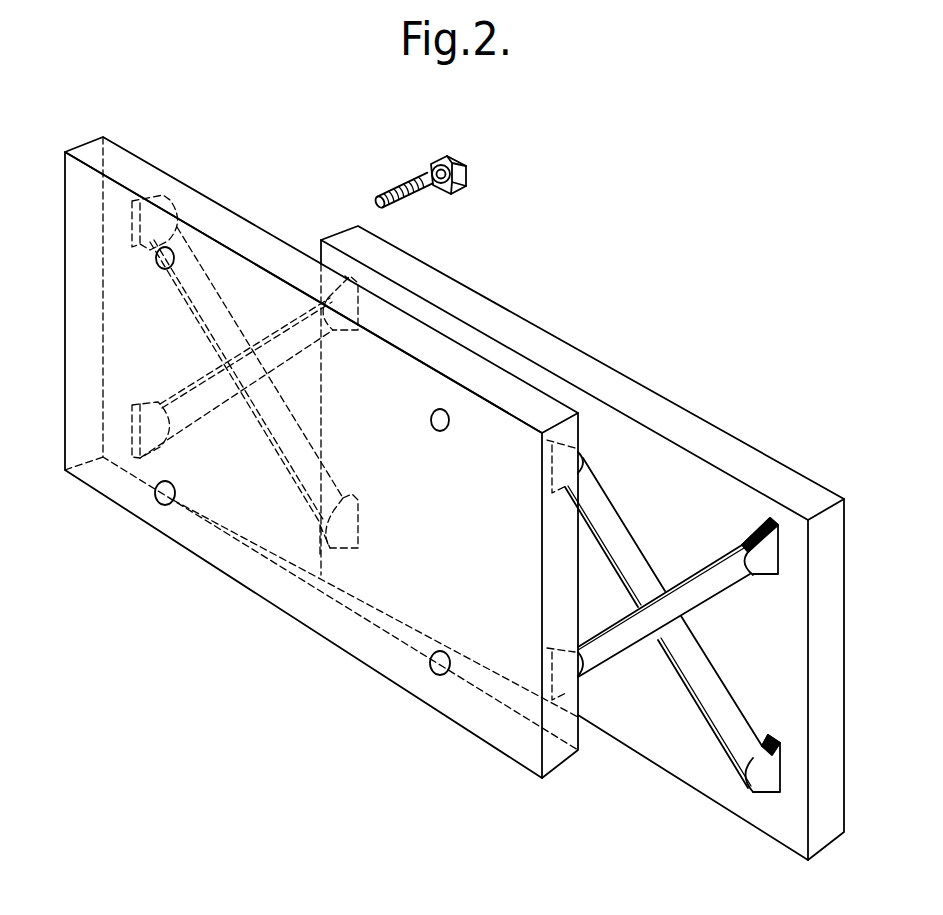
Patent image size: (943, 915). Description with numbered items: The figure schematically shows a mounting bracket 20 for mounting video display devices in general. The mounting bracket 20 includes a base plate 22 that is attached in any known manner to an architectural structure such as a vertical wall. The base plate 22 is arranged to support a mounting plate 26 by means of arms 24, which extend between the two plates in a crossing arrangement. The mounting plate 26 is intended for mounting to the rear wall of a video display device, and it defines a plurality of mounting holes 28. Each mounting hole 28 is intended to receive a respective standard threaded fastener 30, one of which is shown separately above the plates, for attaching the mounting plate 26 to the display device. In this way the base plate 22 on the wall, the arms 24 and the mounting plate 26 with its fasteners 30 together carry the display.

The mounting bracket 20 is at (337, 693).
The base plate 22 is at (617, 450).
The arms 24 is at (717, 580).
The mounting plate 26 is at (345, 405).
The mounting holes 28 is at (170, 255).
The standard threaded fastener 30 is at (405, 184).